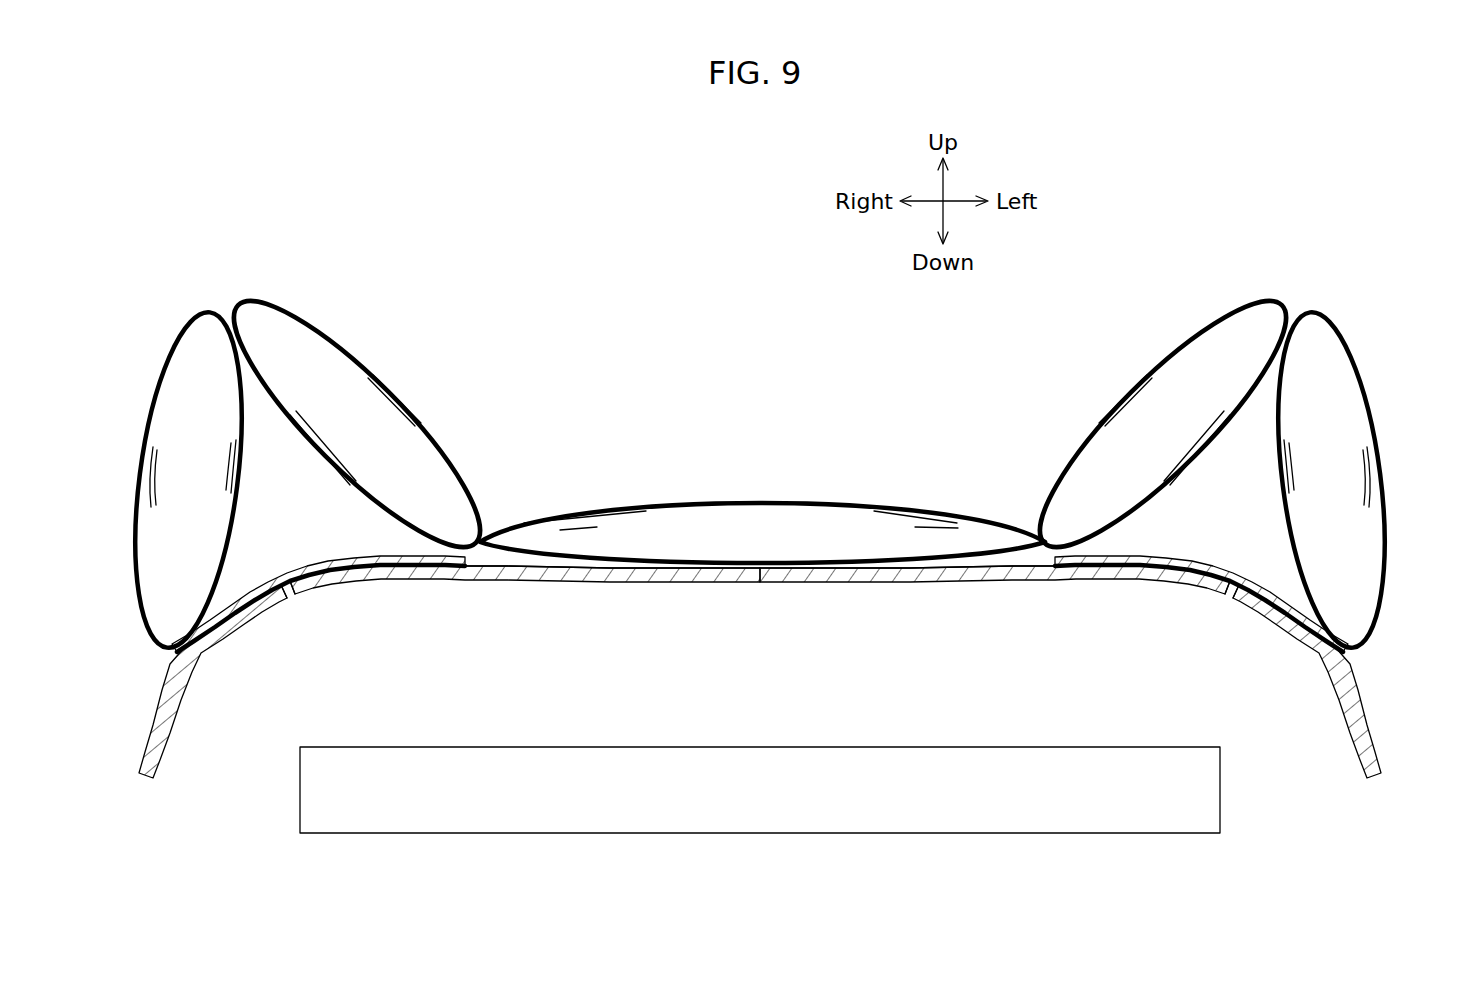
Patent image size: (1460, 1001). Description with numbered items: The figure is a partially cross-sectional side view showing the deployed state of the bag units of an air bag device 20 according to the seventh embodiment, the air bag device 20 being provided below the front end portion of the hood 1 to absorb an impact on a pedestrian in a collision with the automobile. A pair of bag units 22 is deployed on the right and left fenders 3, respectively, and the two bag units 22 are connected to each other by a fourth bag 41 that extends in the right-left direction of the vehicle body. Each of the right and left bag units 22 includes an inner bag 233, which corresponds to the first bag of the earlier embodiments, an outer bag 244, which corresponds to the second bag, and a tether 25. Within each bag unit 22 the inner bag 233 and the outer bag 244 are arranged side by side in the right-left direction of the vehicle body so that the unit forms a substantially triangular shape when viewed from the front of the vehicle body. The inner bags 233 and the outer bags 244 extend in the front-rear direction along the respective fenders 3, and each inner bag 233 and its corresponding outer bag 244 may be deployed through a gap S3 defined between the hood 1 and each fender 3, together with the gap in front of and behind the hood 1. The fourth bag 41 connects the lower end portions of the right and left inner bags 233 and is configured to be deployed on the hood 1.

The hood 1 is at (769, 584).
The fender 3 is at (158, 703).
The air bag device 20 is at (866, 746).
The bag unit 22 is at (760, 408).
The tether 25 is at (287, 568).
The fourth bag 41 is at (760, 502).
The inner bag 233 is at (366, 356).
The outer bag 244 is at (152, 412).
The gap S3 is at (304, 614).